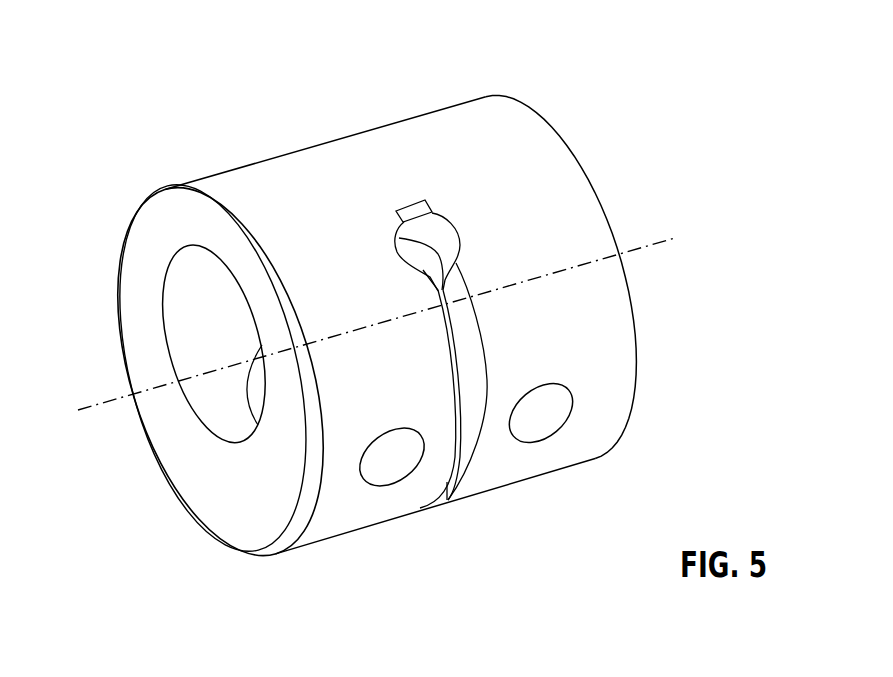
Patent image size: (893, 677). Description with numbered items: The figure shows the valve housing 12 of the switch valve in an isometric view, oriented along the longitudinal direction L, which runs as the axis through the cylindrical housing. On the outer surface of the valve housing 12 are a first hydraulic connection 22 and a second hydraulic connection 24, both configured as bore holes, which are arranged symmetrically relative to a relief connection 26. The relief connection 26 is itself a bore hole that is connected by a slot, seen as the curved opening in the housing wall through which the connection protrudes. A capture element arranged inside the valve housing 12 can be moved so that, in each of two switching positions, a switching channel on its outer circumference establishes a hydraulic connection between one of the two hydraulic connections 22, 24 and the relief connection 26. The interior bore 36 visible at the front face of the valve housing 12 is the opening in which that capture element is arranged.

The valve housing 12 is at (647, 160).
The first hydraulic connection 22 is at (542, 420).
The second hydraulic connection 24 is at (392, 467).
The relief connection 26 is at (442, 240).
The bore 36 is at (217, 415).
The longitudinal direction L is at (78, 410).